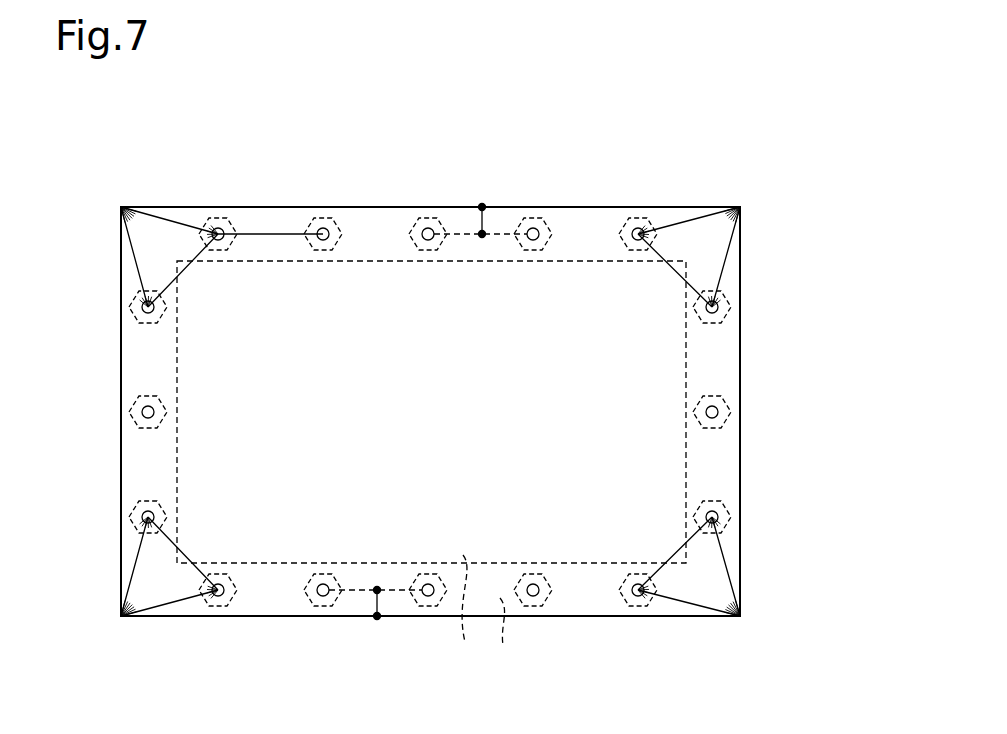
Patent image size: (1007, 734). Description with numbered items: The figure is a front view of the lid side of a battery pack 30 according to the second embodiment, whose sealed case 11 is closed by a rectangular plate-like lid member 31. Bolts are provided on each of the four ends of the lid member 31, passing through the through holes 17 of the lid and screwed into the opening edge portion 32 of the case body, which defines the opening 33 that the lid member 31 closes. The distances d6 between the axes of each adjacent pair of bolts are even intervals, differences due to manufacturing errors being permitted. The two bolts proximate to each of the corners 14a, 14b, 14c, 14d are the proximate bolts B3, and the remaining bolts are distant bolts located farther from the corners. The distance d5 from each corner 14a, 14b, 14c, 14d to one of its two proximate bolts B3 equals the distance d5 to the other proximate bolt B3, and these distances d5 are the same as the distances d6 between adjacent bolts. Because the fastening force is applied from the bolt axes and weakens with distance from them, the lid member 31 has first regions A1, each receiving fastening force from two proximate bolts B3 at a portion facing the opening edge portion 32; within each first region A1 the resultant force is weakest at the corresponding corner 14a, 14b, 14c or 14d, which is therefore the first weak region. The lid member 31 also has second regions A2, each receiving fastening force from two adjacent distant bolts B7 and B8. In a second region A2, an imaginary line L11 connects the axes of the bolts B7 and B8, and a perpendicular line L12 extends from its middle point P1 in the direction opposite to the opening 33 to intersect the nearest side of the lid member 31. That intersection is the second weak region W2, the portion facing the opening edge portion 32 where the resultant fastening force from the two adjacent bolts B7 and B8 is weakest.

The battery pack 30 is at (786, 128).
The sealed case 11 is at (740, 350).
The lid member 31 is at (740, 250).
The through holes 17 is at (718, 411).
The proximate bolts B3 is at (232, 245).
The bolt B7 is at (428, 218).
The bolt B8 is at (535, 250).
The distance between adjacent bolts d6 is at (272, 234).
The distance from corner to proximate bolt d5 is at (188, 226).
The first region A1 is at (150, 243).
The second region A2 is at (510, 215).
The corner 14a is at (740, 616).
The corner 14b is at (121, 207).
The corner 14c is at (121, 616).
The corner 14d is at (740, 207).
The perpendicular line L12 is at (483, 220).
The imaginary line L11 is at (458, 238).
The middle point P1 is at (482, 238).
The second weak region W2 is at (482, 205).
The opening 33 is at (466, 613).
The opening edge portion 32 is at (508, 636).